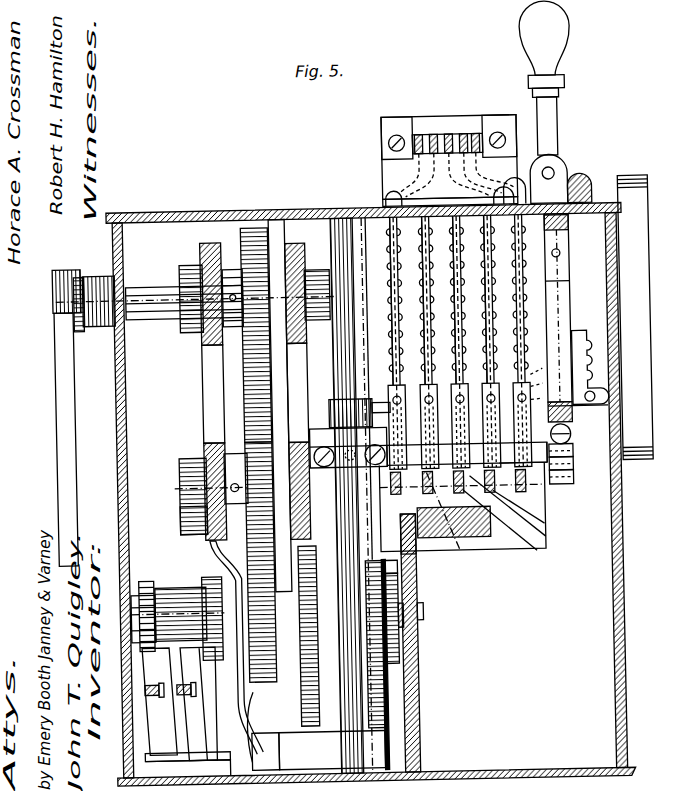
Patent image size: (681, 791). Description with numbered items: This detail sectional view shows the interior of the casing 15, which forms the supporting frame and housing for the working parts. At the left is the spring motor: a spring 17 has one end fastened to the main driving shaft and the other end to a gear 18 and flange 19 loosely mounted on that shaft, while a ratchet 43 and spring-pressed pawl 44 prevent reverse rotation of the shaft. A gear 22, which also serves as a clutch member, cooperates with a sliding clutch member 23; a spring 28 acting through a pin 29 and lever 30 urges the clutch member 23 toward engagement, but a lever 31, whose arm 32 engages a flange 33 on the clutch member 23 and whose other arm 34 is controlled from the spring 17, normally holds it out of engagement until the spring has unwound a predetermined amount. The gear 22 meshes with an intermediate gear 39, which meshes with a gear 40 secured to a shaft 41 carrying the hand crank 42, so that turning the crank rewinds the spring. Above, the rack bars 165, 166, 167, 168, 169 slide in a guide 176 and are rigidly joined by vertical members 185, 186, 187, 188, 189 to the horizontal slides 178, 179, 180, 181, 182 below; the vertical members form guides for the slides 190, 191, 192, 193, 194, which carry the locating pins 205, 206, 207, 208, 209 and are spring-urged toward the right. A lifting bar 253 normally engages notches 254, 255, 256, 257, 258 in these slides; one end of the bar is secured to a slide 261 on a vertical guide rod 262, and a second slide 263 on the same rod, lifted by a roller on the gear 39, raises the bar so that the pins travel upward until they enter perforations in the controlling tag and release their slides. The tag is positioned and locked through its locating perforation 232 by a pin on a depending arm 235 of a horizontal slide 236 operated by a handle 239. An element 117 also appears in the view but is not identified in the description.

The casing 15 is at (622, 520).
The spring 17 is at (332, 750).
The gear 18 is at (297, 706).
The flange 19 is at (390, 712).
The gear 22 is at (259, 677).
The clutch member 23 is at (205, 582).
The spring 28 is at (142, 686).
The pin 29 is at (196, 682).
The lever 30 is at (178, 749).
The lever 31 is at (170, 726).
The arm 32 is at (160, 662).
The flange 33 is at (145, 576).
The arm 34 is at (263, 731).
The intermediate gear 39 is at (205, 412).
The gear 40 is at (246, 250).
The shaft 41 is at (141, 316).
The hand crank 42 is at (58, 349).
The ratchet 43 is at (395, 647).
The spring-pressed pawl 44 is at (396, 573).
The collar 117 is at (306, 262).
The rack bar 165 is at (484, 135).
The rack bar 166 is at (474, 135).
The rack bar 167 is at (441, 135).
The rack bar 168 is at (427, 135).
The rack bar 169 is at (421, 138).
The guide 176 is at (457, 135).
The horizontal slide 178 is at (546, 512).
The horizontal slide 179 is at (545, 530).
The horizontal slide 180 is at (546, 541).
The horizontal slide 181 is at (479, 540).
The horizontal slide 182 is at (416, 548).
The vertical member 185 is at (560, 245).
The vertical member 186 is at (495, 246).
The vertical member 187 is at (463, 246).
The vertical member 188 is at (432, 246).
The vertical member 189 is at (395, 233).
The slide 190 is at (528, 385).
The slide 191 is at (497, 385).
The slide 192 is at (466, 385).
The slide 193 is at (435, 385).
The slide 194 is at (404, 384).
The locating pin 205 is at (545, 372).
The locating pin 206 is at (545, 387).
The locating pin 207 is at (545, 402).
The locating pin 208 is at (383, 403).
The locating pin 209 is at (386, 386).
The locating perforation 232 is at (573, 436).
The depending arm 235 is at (584, 338).
The horizontal slide 236 is at (560, 174).
The operating handle 239 is at (566, 32).
The lifting bar 253 is at (546, 486).
The notch 254 is at (574, 450).
The notch 255 is at (574, 465).
The notch 256 is at (574, 480).
The notch 257 is at (536, 552).
The notch 258 is at (362, 437).
The slide 261 is at (335, 412).
The vertical guide rod 262 is at (347, 343).
The slide 263 is at (242, 544).